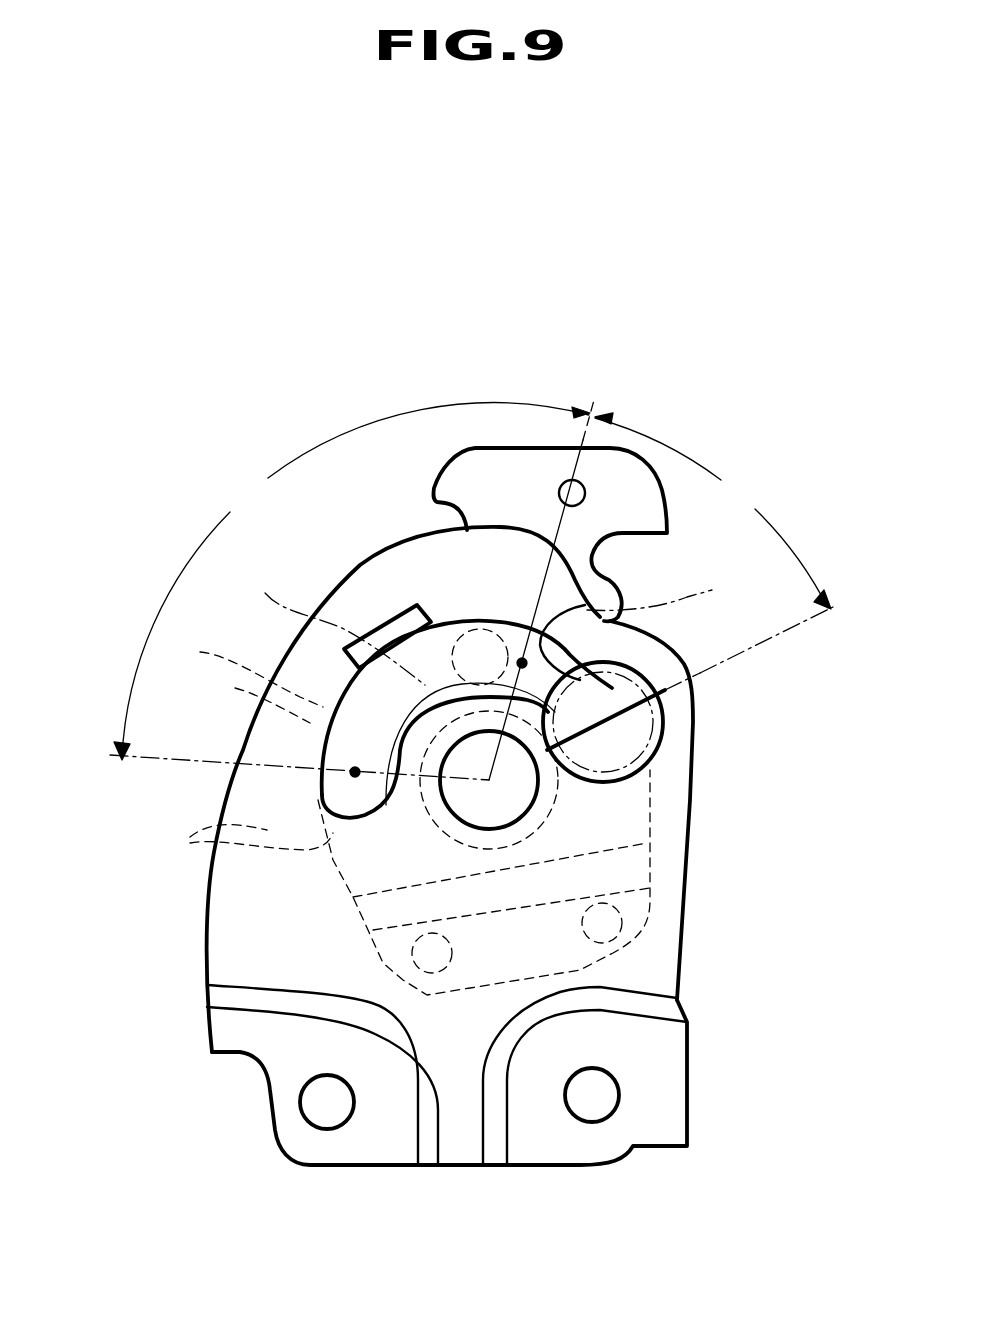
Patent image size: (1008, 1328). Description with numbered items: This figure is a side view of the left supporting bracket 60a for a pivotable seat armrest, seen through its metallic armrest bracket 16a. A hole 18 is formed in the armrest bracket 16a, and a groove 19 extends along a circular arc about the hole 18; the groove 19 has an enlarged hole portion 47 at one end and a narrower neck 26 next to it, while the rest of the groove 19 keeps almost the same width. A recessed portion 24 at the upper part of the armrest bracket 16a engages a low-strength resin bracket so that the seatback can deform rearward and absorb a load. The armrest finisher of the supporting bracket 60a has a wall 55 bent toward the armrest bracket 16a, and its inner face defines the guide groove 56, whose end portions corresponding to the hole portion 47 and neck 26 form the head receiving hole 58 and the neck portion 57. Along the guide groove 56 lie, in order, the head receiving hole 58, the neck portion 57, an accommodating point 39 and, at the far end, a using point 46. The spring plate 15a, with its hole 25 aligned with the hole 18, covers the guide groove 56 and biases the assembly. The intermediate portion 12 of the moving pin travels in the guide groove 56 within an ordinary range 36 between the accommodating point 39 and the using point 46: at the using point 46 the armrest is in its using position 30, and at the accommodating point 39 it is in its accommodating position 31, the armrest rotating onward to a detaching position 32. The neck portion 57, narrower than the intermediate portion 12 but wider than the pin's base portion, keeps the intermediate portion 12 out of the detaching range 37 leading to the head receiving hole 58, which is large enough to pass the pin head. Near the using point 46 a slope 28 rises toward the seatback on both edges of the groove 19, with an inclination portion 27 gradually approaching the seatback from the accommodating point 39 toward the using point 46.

The intermediate portion 12 is at (497, 617).
The spring plate 15a is at (653, 823).
The armrest bracket 16a is at (684, 948).
The hole 18 is at (470, 812).
The groove 19 is at (447, 633).
The recessed portion 24 is at (596, 572).
The hole 25 is at (650, 888).
The neck 26 is at (643, 673).
The inclination portion 27 is at (237, 676).
The slope 28 is at (238, 839).
The using position 30 is at (275, 754).
The accommodating position 31 is at (554, 568).
The detaching position 32 is at (798, 627).
The ordinary range 36 is at (355, 580).
The detaching range 37 is at (711, 513).
The accommodating point 39 is at (518, 655).
The using point 46 is at (350, 773).
The hole portion 47 is at (665, 736).
The wall 55 is at (522, 660).
The guide groove 56 is at (317, 626).
The neck portion 57 is at (671, 586).
The head receiving hole 58 is at (680, 712).
The supporting bracket 60a is at (705, 1052).